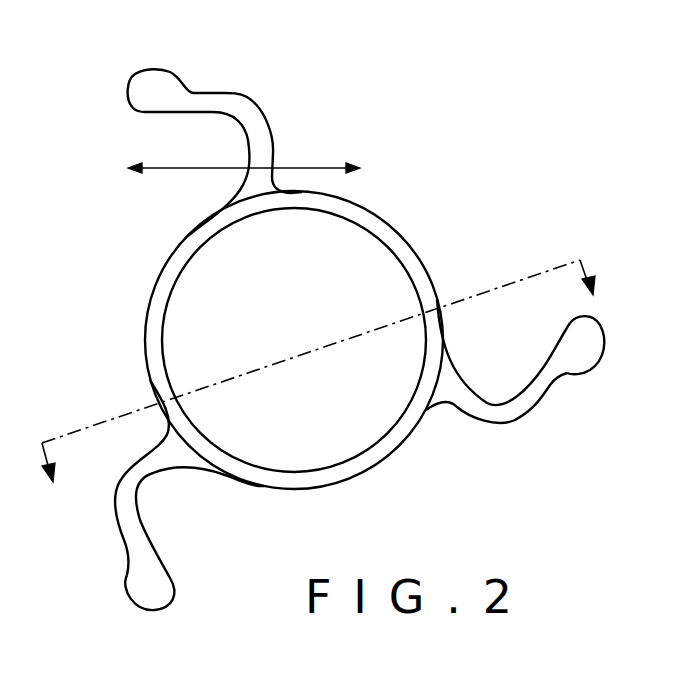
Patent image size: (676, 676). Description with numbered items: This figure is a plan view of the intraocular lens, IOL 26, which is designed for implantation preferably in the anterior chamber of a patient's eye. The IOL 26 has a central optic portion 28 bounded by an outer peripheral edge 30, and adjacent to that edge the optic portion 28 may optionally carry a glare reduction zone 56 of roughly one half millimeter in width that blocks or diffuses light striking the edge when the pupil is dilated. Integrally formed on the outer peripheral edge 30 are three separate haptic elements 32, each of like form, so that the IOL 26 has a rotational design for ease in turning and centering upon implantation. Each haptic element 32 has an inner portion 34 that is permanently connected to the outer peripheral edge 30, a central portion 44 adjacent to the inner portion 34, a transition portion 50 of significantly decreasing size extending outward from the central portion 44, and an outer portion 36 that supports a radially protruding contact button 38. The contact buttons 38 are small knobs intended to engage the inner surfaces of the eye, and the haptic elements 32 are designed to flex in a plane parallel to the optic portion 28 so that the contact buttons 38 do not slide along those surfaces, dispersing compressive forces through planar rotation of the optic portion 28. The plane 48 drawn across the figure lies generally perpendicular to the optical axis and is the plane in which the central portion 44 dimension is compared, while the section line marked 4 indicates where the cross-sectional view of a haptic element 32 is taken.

The IOL 26 is at (413, 133).
The optic portion 28 is at (365, 263).
The outer peripheral edge 30 is at (433, 275).
The haptic element 32 is at (173, 113).
The inner portion 34 is at (300, 192).
The outer portion 36 is at (129, 103).
The contact button 38 is at (167, 68).
The central portion 44 is at (273, 120).
The plane 48— 48 is at (247, 166).
The transition portion 50 is at (188, 113).
The glare reduction zone 56 is at (325, 490).
The section line 4- 4 is at (326, 381).